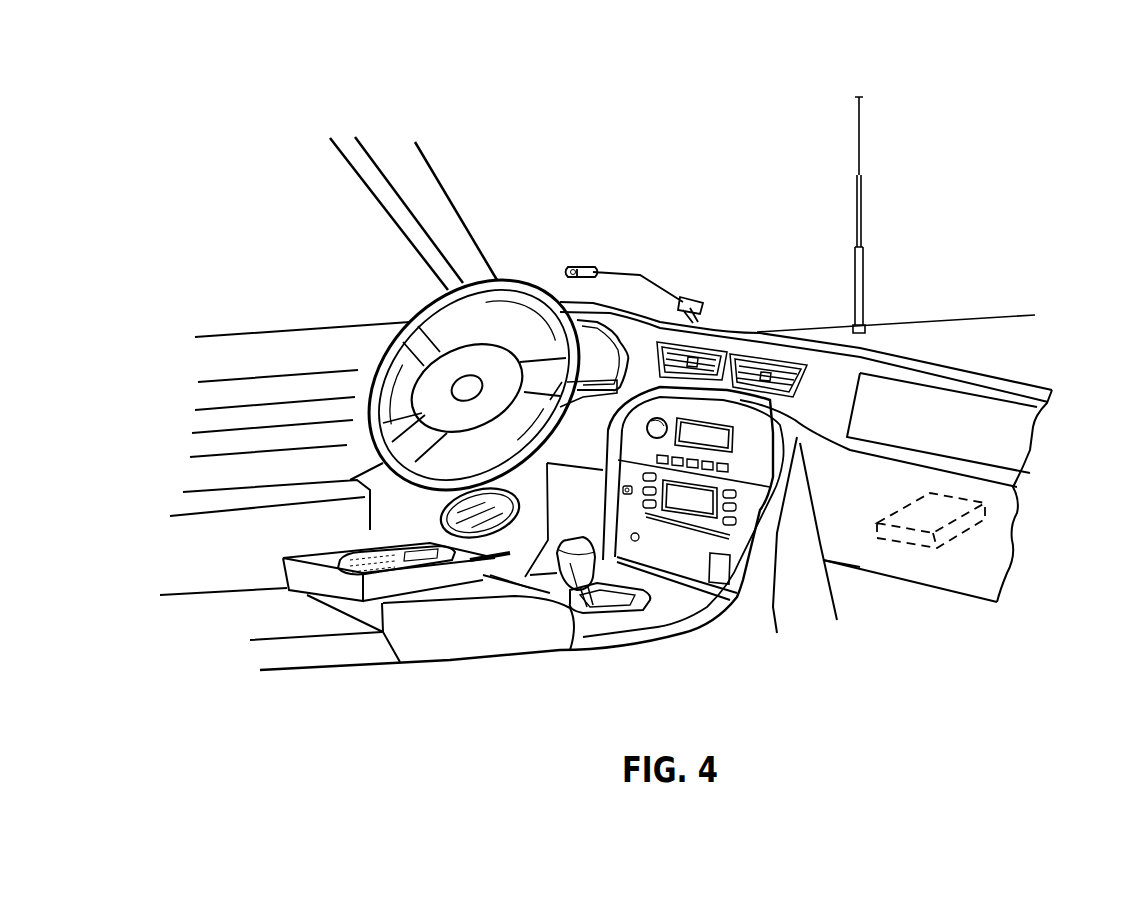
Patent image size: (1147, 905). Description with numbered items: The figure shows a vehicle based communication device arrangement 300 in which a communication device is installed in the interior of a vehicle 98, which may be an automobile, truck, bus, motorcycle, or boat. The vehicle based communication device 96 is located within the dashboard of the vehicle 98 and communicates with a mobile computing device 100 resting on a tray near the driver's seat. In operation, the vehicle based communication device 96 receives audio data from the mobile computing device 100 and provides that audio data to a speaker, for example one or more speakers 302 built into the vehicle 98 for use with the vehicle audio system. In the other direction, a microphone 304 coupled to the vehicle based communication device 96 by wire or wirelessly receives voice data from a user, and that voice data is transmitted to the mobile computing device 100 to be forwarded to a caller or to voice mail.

The vehicle based communication device arrangement 300 is at (1067, 150).
The microphone 304 is at (643, 273).
The vehicle 98 is at (1030, 382).
The vehicle based communication device 96 is at (993, 552).
The speakers 302 is at (443, 517).
The mobile computing device 100 is at (350, 570).